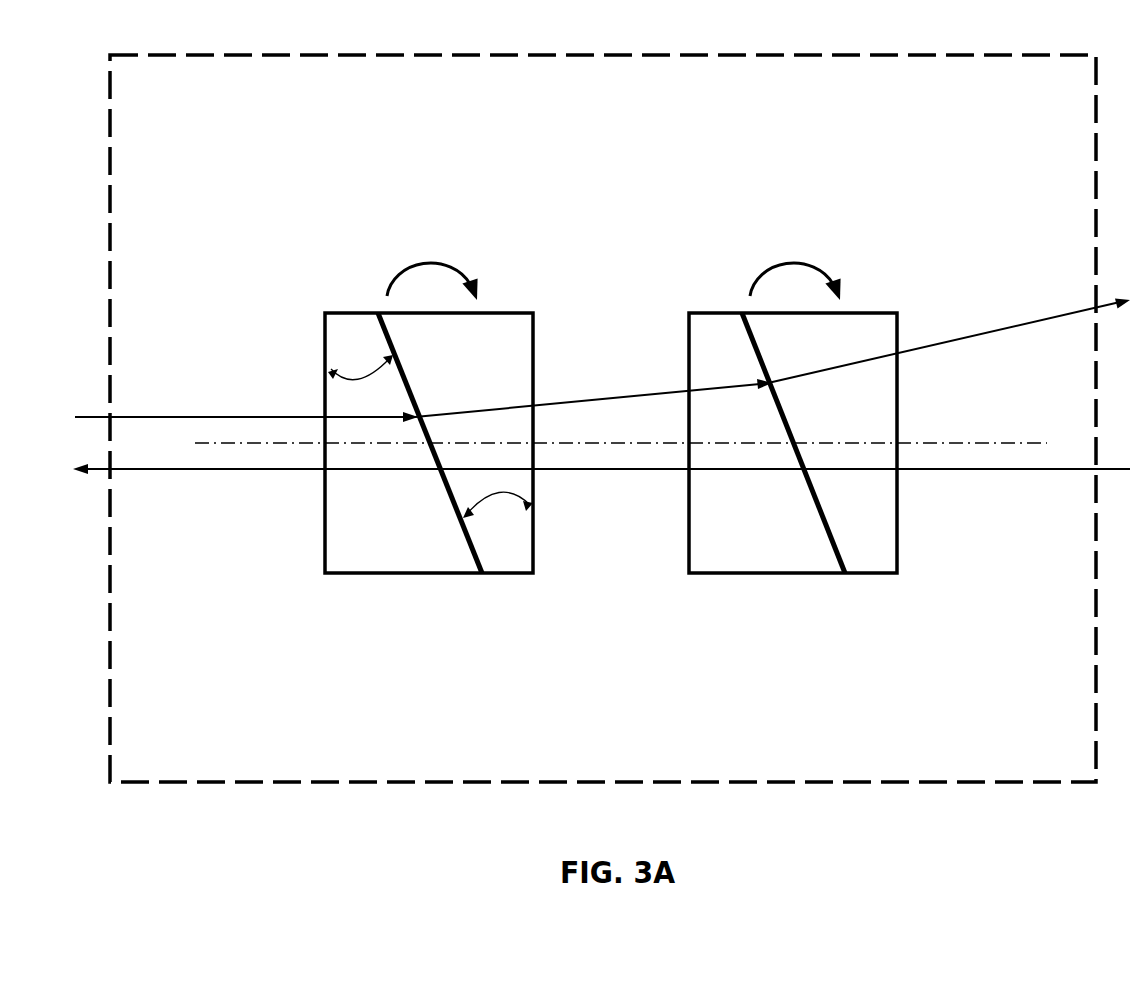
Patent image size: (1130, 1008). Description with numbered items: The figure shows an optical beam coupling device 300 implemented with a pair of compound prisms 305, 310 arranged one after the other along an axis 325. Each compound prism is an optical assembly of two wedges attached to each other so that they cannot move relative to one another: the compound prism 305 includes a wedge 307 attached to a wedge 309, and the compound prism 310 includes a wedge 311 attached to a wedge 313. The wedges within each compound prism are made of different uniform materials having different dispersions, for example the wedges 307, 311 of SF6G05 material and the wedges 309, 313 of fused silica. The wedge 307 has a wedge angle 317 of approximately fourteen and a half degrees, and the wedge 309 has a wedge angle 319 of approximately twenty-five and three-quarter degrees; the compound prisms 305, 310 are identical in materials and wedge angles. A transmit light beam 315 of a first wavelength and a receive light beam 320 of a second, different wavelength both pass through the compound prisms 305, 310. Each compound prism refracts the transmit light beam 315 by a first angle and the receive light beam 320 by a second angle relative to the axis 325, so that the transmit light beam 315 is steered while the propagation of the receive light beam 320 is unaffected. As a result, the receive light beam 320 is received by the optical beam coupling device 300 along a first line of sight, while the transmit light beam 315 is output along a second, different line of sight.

The optical beam coupling device 300 is at (270, 149).
The compound prism 305 is at (409, 435).
The wedge 307 is at (387, 518).
The wedge 309 is at (518, 352).
The compound prism 310 is at (788, 445).
The wedge 311 is at (748, 535).
The wedge 313 is at (870, 540).
The transmit light beam 315 is at (962, 343).
The wedge angle 317 is at (355, 377).
The wedge angle 319 is at (537, 590).
The receive light beam 320 is at (977, 470).
The axis 325 is at (223, 445).